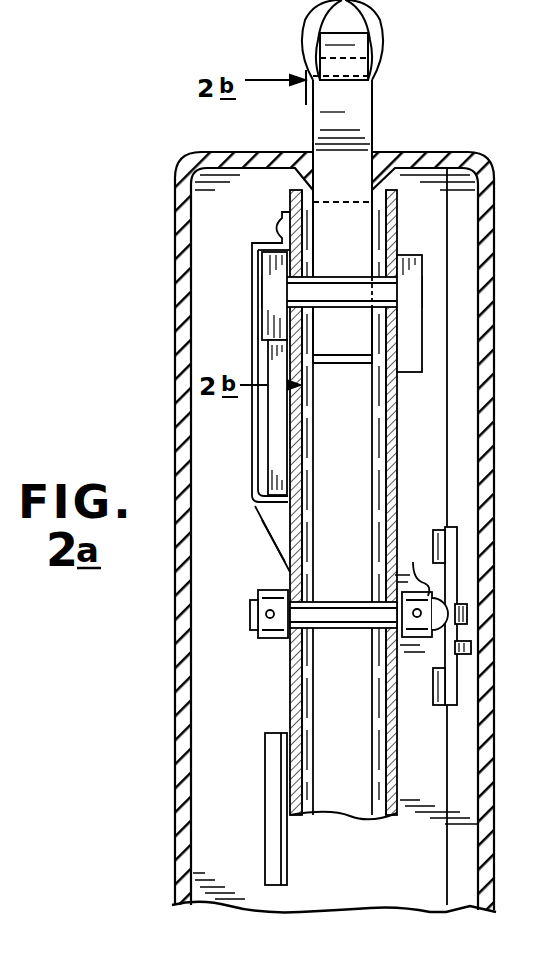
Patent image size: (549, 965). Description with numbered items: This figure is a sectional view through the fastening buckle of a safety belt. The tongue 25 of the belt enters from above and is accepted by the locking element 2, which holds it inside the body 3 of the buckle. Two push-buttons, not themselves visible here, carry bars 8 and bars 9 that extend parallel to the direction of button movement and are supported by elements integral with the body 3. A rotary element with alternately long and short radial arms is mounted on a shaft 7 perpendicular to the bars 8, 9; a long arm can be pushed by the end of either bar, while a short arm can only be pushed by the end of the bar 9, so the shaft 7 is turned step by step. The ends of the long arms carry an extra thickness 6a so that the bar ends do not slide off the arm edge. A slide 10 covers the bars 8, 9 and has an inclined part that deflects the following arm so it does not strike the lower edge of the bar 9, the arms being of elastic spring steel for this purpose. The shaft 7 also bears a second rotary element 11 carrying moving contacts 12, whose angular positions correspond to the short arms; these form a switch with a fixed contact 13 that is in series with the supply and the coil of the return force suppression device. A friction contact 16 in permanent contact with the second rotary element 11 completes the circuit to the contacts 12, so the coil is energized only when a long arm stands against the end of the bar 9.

The locking element 2 is at (345, 295).
The body 3 is at (378, 816).
The extra thickness of the long arms 6a is at (245, 612).
The shaft 7 is at (345, 612).
The bar 8 is at (268, 295).
The bar 9 is at (262, 518).
The slide 10 is at (270, 525).
The second rotary element 11 is at (450, 592).
The contacts 12 is at (437, 530).
The fixed contact 13 is at (418, 566).
The friction contact 16 is at (470, 648).
The tongue 25 is at (362, 115).